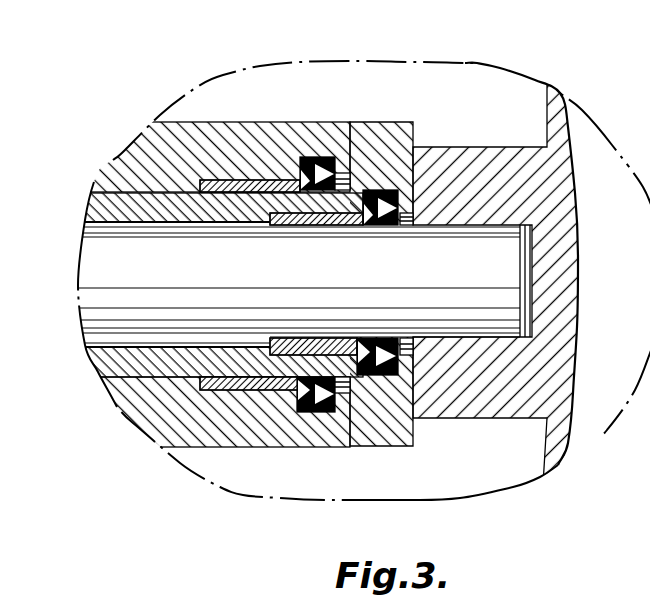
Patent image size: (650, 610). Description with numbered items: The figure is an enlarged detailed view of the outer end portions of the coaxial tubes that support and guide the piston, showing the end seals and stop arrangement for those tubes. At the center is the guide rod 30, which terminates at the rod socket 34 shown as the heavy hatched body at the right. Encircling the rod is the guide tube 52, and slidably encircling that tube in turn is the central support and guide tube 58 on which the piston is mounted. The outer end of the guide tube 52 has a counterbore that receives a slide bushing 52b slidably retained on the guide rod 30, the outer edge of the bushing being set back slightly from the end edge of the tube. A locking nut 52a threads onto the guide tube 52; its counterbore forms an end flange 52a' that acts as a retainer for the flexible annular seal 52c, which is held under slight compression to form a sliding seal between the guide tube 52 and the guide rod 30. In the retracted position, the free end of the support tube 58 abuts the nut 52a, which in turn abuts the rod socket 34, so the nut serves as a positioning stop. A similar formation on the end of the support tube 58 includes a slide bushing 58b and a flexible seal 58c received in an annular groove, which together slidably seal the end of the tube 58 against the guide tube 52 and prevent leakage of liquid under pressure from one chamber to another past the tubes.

The guide rod 30 is at (102, 303).
The rod socket 34 is at (490, 150).
The guide tube 52 is at (102, 203).
The locking nut 52a is at (397, 227).
The end flange 52a' is at (449, 280).
The slide bushing 52b is at (287, 218).
The flexible annular seal 52c is at (362, 218).
The central support and guide tube 58 is at (155, 150).
The slide bushing 58b is at (248, 183).
The flexible seal 58c is at (321, 160).